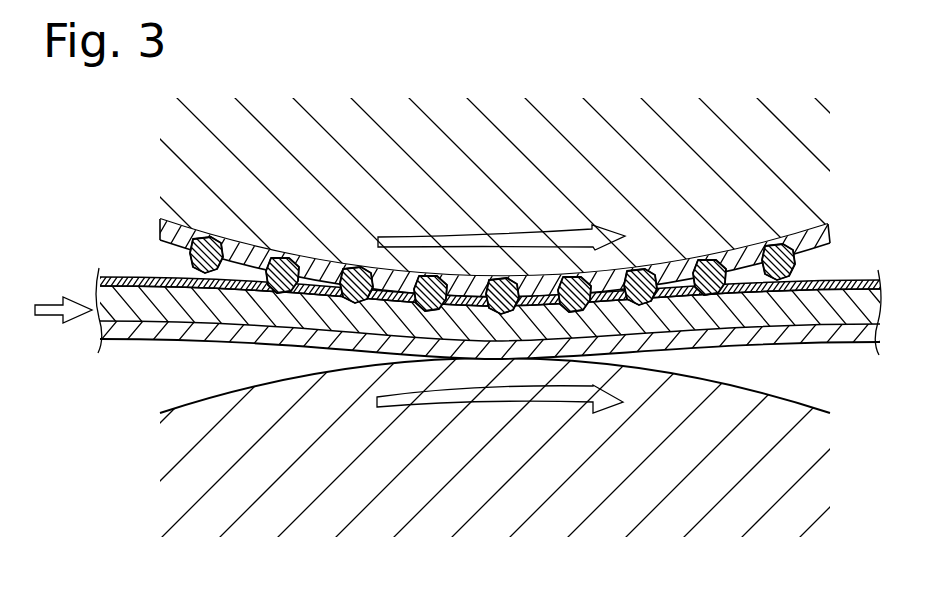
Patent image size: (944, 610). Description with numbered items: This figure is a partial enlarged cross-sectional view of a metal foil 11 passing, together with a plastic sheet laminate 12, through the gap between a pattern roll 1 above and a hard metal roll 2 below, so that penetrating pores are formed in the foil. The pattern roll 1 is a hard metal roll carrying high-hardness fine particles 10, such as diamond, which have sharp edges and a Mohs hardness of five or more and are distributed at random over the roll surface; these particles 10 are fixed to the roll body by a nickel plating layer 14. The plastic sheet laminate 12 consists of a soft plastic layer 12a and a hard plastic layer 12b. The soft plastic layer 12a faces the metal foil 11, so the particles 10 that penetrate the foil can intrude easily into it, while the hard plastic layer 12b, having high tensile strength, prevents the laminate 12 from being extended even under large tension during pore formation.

The pattern roll 1 is at (494, 145).
The hard metal roll 2 is at (494, 513).
The high-hardness fine particles 10 is at (793, 285).
The metal foil 11 is at (115, 276).
The plastic sheet laminate 12 is at (473, 346).
The soft plastic layer 12a is at (112, 313).
The hard plastic layer 12b is at (140, 332).
The nickel plating layer 14 is at (757, 262).